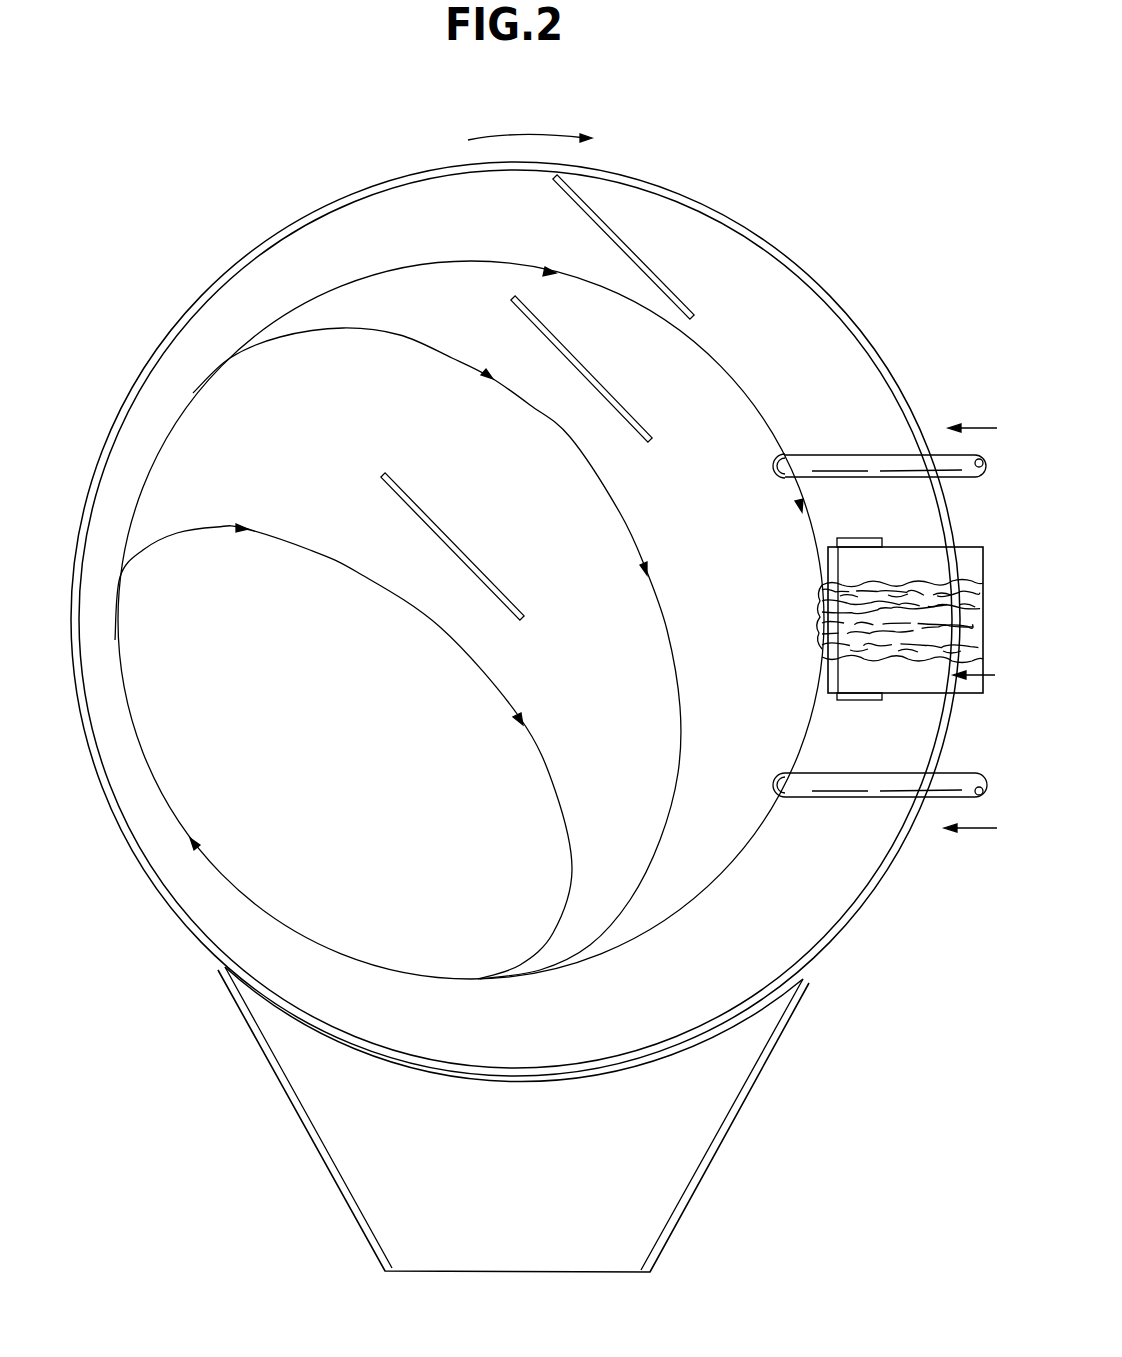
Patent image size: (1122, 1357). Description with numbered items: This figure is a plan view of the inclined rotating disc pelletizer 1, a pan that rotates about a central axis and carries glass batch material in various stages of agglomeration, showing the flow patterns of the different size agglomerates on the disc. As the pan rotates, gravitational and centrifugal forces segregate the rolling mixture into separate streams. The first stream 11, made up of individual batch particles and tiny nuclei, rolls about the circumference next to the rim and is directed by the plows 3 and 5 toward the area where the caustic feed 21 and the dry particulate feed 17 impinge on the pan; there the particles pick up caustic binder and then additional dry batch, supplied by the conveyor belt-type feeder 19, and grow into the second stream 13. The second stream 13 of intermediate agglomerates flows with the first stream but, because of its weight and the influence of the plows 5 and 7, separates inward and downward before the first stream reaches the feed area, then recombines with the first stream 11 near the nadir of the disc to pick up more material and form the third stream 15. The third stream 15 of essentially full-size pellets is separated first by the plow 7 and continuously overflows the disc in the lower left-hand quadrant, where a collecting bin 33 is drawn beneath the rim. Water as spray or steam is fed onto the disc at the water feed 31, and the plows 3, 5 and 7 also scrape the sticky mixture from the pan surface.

The rotating disc pelletizer 1 is at (342, 774).
The plow 3 is at (636, 265).
The plow 5 is at (646, 430).
The plow 7 is at (434, 519).
The first stream 11 is at (490, 263).
The second stream 13 is at (452, 357).
The third stream 15 is at (355, 572).
The dry particulate feed 17 is at (820, 603).
The conveyor belt-type feeder 19 is at (857, 560).
The caustic feed 21 is at (963, 471).
The water feed 31 is at (958, 781).
The collecting hopper 33 is at (530, 1170).